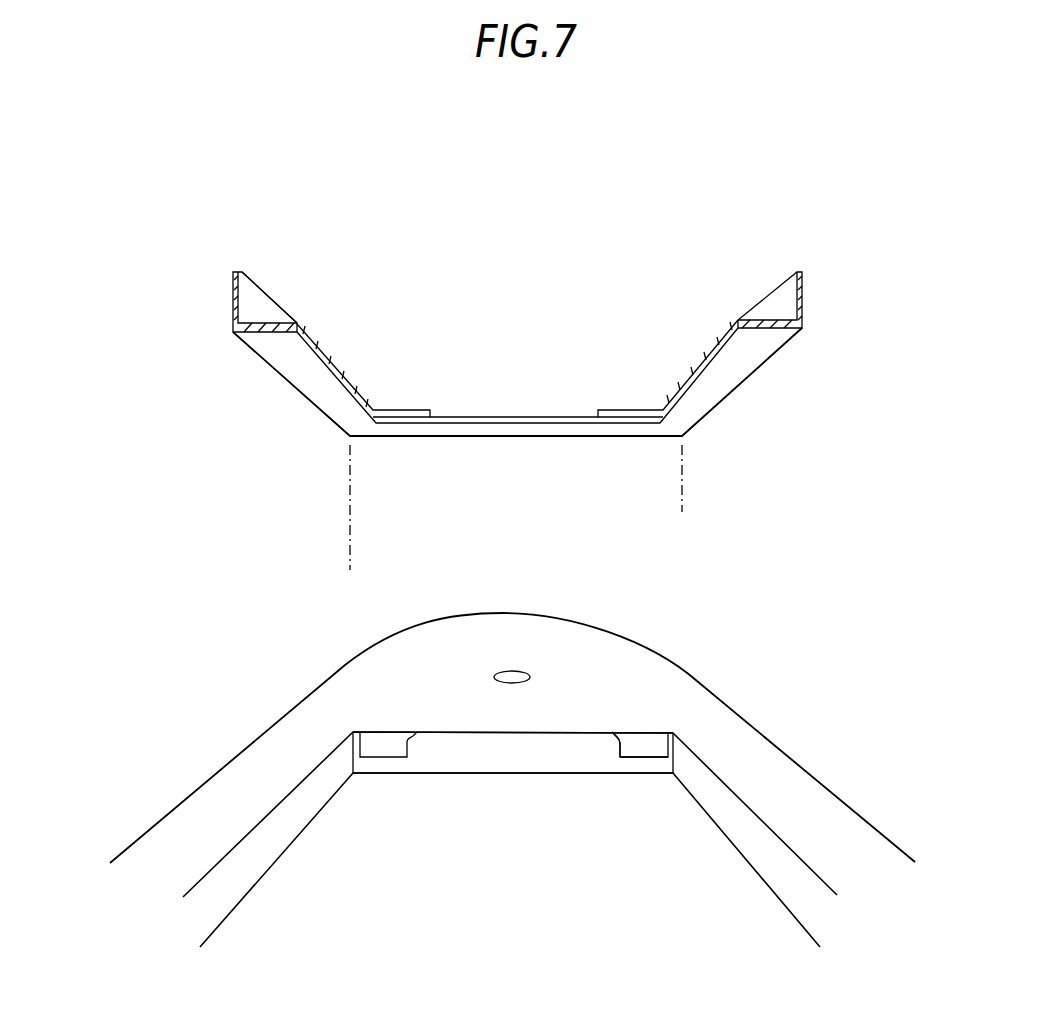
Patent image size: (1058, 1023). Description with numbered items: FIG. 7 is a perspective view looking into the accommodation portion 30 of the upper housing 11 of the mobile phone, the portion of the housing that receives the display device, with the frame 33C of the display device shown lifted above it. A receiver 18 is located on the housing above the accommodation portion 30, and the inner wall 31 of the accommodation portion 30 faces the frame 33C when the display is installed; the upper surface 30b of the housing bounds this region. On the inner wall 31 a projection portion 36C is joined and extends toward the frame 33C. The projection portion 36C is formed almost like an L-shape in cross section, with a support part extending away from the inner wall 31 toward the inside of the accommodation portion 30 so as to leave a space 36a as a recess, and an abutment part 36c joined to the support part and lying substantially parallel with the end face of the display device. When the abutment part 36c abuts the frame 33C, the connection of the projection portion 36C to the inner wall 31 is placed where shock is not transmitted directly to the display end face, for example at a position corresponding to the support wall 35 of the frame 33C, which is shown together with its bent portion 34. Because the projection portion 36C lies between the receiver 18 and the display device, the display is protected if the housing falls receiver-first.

The housing 11 is at (218, 770).
The receiver 18 is at (514, 672).
The accommodation portion 30 is at (493, 947).
The upper surface 30b is at (643, 732).
The inner wall 31 is at (463, 750).
The frame 33C is at (303, 402).
The bent portion 34 is at (233, 297).
The support wall 35 is at (265, 322).
The space 36a is at (612, 746).
The abutment part 36c is at (656, 752).
The projection portion 36C is at (383, 758).